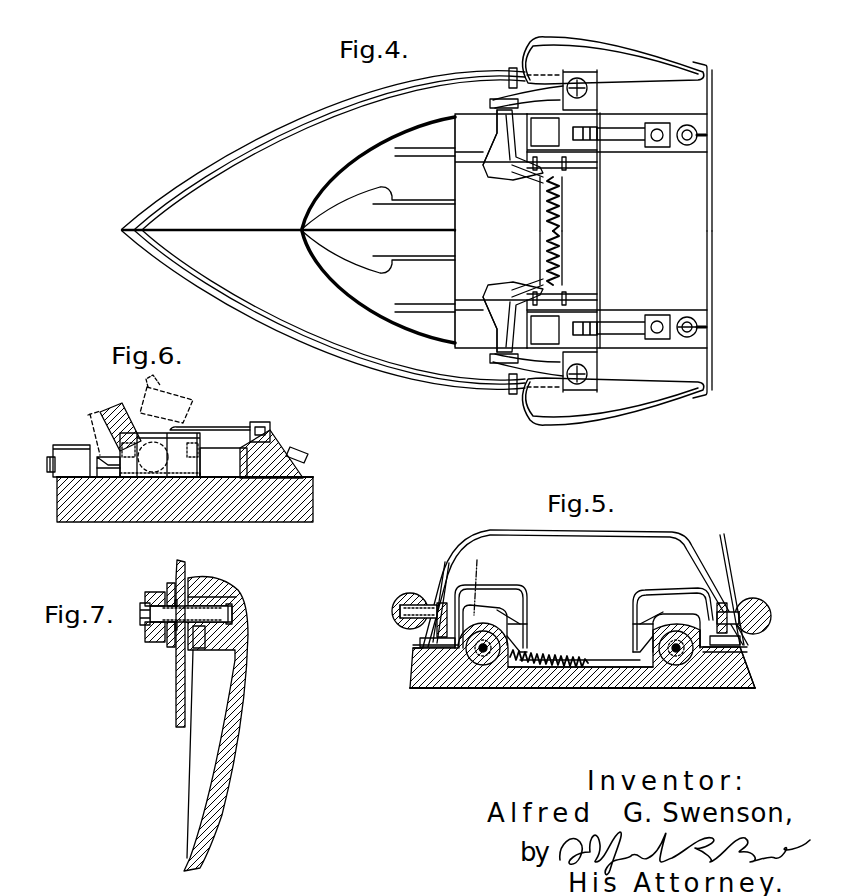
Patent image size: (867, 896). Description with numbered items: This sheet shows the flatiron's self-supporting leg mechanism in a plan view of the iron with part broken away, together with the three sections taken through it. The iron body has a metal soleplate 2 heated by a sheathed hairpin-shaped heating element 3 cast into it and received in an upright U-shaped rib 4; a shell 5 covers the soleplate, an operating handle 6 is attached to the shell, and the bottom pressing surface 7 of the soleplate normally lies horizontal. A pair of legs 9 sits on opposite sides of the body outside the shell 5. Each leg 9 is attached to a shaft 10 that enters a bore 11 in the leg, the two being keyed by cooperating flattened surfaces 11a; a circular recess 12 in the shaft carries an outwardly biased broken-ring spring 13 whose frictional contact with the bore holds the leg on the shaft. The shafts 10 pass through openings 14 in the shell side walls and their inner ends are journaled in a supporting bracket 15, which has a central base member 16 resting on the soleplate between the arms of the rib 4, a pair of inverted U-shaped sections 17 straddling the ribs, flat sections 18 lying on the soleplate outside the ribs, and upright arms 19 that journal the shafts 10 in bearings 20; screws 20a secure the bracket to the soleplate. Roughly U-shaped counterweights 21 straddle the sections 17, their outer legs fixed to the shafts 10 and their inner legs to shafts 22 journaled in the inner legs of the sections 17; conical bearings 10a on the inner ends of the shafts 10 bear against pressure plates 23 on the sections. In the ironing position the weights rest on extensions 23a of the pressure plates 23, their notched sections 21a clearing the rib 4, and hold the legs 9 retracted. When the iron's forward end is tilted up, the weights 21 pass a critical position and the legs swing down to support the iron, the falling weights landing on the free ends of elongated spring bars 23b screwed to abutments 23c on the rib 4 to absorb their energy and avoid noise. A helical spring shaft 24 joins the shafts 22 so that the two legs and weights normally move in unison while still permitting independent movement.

In FIG. 4, the soleplate 2 is at (257, 318).
In FIG. 6, the soleplate 2 is at (276, 521).
In FIG. 5, the soleplate 2 is at (410, 687).
In FIG. 4, the heating element 3 is at (687, 320).
In FIG. 6, the heating element 3 is at (53, 479).
In FIG. 5, the heating element 3 is at (701, 660).
In FIG. 4, the U-shaped rib 4 is at (640, 312).
In FIG. 6, the U-shaped rib 4 is at (53, 446).
In FIG. 5, the U-shaped rib 4 is at (522, 614).
In FIG. 4, the shell 5 is at (258, 163).
In FIG. 7, the shell 5 is at (176, 711).
In FIG. 5, the shell 5 is at (497, 533).
In FIG. 4, the operating handle 6 is at (417, 268).
In FIG. 5, the operating handle 6 is at (477, 560).
In FIG. 6, the pressing surface 7 is at (125, 521).
In FIG. 5, the pressing surface 7 is at (558, 690).
In FIG. 4, the legs 9 is at (625, 56).
In FIG. 7, the legs 9 is at (248, 656).
In FIG. 5, the legs 9 is at (392, 610).
In FIG. 7, the shaft 10 is at (193, 596).
In FIG. 5, the shaft 10 is at (412, 597).
In FIG. 4, the conical bearing 10a is at (580, 80).
In FIG. 7, the conical bearing 10a is at (140, 618).
In FIG. 7, the bore 11 is at (210, 590).
In FIG. 5, the bore 11 is at (400, 617).
In FIG. 7, the flattened surfaces 11a is at (248, 632).
In FIG. 7, the circular recess 12 is at (236, 611).
In FIG. 7, the broken-ring spring 13 is at (225, 656).
In FIG. 7, the openings 14 is at (200, 652).
In FIG. 5, the openings 14 is at (425, 648).
In FIG. 4, the supporting bracket 15 is at (602, 258).
In FIG. 5, the supporting bracket 15 is at (530, 634).
In FIG. 4, the central base member 16 is at (593, 243).
In FIG. 5, the central base member 16 is at (617, 668).
In FIG. 4, the U-shaped sections 17 is at (590, 153).
In FIG. 6, the U-shaped sections 17 is at (150, 431).
In FIG. 5, the U-shaped sections 17 is at (476, 618).
In FIG. 4, the flat sections 18 is at (510, 96).
In FIG. 6, the flat sections 18 is at (175, 490).
In FIG. 5, the flat sections 18 is at (435, 688).
In FIG. 4, the upright arms 19 is at (513, 67).
In FIG. 7, the upright arms 19 is at (172, 645).
In FIG. 5, the upright arms 19 is at (425, 640).
In FIG. 7, the bearings 20 is at (170, 604).
In FIG. 5, the bearings 20 is at (430, 630).
In FIG. 4, the screws 20a is at (588, 97).
In FIG. 4, the counterweights 21 is at (503, 181).
In FIG. 6, the counterweights 21 is at (108, 407).
In FIG. 7, the counterweights 21 is at (160, 646).
In FIG. 5, the counterweights 21 is at (532, 602).
In FIG. 4, the notched sections 21a is at (495, 133).
In FIG. 6, the notched sections 21a is at (90, 442).
In FIG. 5, the notched sections 21a is at (505, 618).
In FIG. 5, the shafts 22 is at (500, 667).
In FIG. 4, the pressure plates 23 is at (617, 122).
In FIG. 6, the pressure plates 23 is at (200, 478).
In FIG. 5, the pressure plates 23 is at (443, 585).
In FIG. 4, the extensions 23a is at (493, 100).
In FIG. 6, the extensions 23a is at (105, 496).
In FIG. 4, the spring bars 23b is at (633, 140).
In FIG. 6, the spring bars 23b is at (215, 427).
In FIG. 4, the abutments 23c is at (680, 116).
In FIG. 6, the abutments 23c is at (237, 452).
In FIG. 4, the helical spring shaft 24 is at (560, 248).
In FIG. 5, the helical spring shaft 24 is at (580, 653).